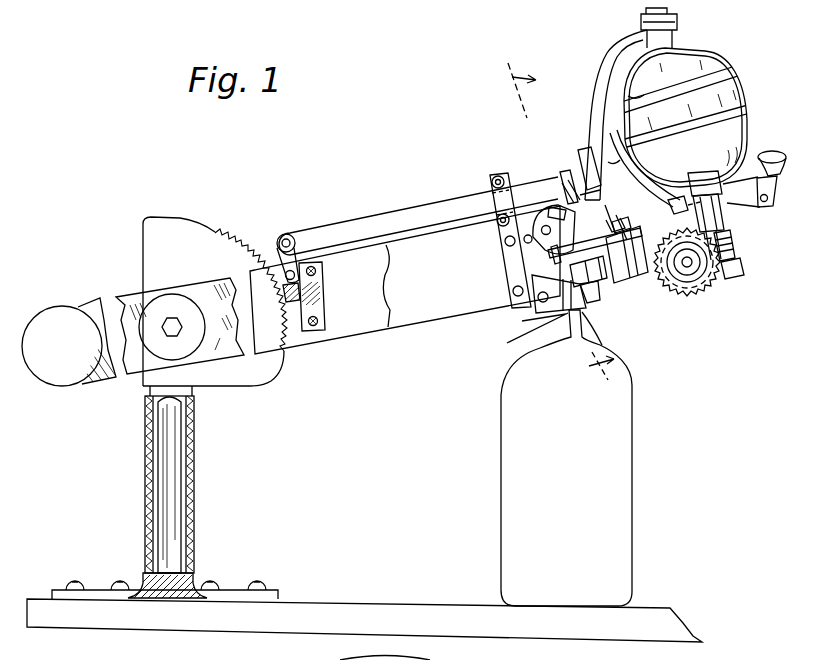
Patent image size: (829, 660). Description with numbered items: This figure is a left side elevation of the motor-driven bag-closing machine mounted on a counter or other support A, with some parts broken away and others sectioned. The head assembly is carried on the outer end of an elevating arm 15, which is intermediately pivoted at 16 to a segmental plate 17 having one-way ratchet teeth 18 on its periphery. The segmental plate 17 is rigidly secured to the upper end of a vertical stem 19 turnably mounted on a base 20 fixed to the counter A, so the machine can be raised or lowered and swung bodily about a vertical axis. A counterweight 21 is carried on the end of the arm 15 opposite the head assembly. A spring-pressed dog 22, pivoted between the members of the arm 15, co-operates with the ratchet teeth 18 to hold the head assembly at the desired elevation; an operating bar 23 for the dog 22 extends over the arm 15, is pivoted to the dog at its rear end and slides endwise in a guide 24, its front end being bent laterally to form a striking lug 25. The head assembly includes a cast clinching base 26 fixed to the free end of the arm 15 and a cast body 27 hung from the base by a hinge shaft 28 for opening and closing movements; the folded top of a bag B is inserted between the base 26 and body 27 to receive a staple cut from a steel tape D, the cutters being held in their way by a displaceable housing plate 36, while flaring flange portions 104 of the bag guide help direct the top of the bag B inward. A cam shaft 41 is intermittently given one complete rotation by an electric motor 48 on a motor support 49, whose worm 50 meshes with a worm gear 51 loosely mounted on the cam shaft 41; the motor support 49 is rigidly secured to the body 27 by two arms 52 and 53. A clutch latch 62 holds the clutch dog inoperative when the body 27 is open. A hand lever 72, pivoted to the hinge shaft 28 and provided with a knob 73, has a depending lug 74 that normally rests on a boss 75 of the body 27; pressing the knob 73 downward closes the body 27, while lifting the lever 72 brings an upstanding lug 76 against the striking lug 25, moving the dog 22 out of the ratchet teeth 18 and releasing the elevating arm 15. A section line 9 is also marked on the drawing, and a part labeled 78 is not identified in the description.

The counter or other support A is at (362, 600).
The bag B is at (634, 442).
The steel strip or tape D is at (588, 150).
The section line 9 is at (565, 227).
The elevating arm 15 is at (212, 356).
The pivot 16 is at (173, 325).
The segmental plate 17 is at (270, 372).
The one-way ratchet teeth 18 is at (247, 234).
The vertical stem 19 is at (178, 452).
The base 20 is at (190, 590).
The counterweight 21 is at (64, 380).
The spring-pressed dog 22 is at (296, 262).
The operating bar 23 is at (402, 218).
The guide 24 is at (496, 200).
The striking lug 25 is at (563, 188).
The clinching base 26 is at (532, 254).
The body or frame 27 is at (602, 283).
The hinge shaft 28 is at (500, 235).
The housing plate 36 is at (616, 305).
The cam shaft 41 is at (688, 266).
The electric motor 48 is at (722, 70).
The motor support 49 is at (611, 60).
The worm 50 is at (736, 250).
The worm gear 51 is at (696, 290).
The arm 52 is at (724, 280).
The arm 53 is at (575, 228).
The clutch latch 62 is at (636, 285).
The hand lever 72 is at (678, 190).
The knob 73 is at (776, 165).
The depending lug 74 is at (608, 208).
The boss 75 is at (622, 280).
The upstanding lug 76 is at (610, 162).
The padding 78 is at (630, 96).
The flaring flange portions 104 is at (553, 302).